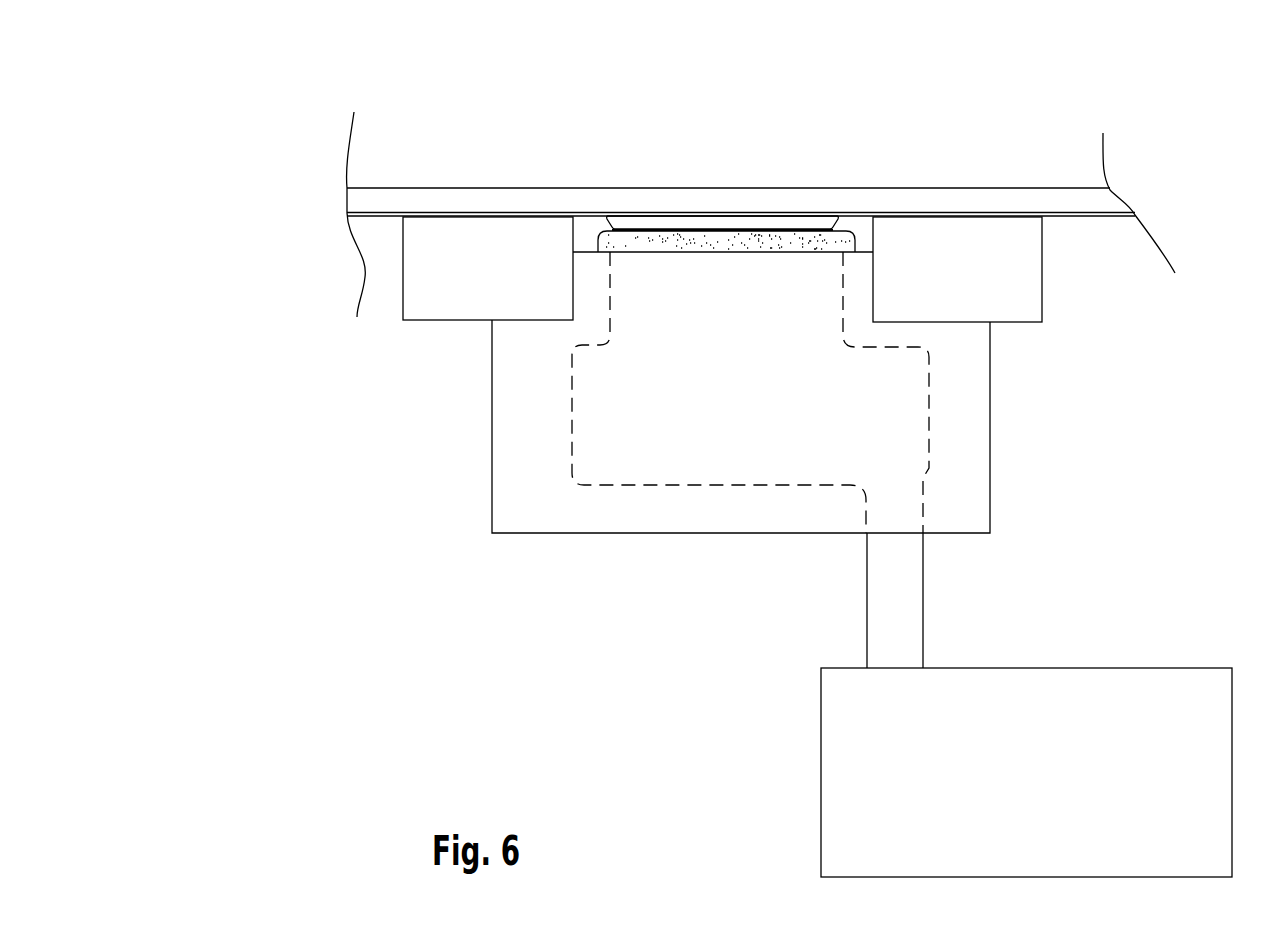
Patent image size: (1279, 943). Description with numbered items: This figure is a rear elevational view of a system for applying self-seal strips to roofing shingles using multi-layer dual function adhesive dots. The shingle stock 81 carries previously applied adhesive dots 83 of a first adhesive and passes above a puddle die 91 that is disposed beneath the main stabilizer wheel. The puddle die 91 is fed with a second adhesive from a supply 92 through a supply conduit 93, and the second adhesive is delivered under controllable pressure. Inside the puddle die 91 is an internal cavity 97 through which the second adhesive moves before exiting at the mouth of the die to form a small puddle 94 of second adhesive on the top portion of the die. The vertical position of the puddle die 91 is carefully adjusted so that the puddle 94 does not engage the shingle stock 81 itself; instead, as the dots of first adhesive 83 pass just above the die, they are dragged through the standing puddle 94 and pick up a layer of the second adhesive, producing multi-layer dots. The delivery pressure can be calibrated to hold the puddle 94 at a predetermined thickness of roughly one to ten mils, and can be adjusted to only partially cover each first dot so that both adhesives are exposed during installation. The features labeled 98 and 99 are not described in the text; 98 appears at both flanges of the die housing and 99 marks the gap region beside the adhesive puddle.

The shingle stock 81 is at (863, 200).
The adhesive dots 83 is at (682, 220).
The puddle die 91 is at (968, 393).
The supply 92 is at (1123, 695).
The supply conduit 93 is at (907, 612).
The puddle 94 is at (762, 242).
The internal cavity 97 is at (718, 485).
The flange 98 is at (433, 288).
The gap 99 is at (592, 230).